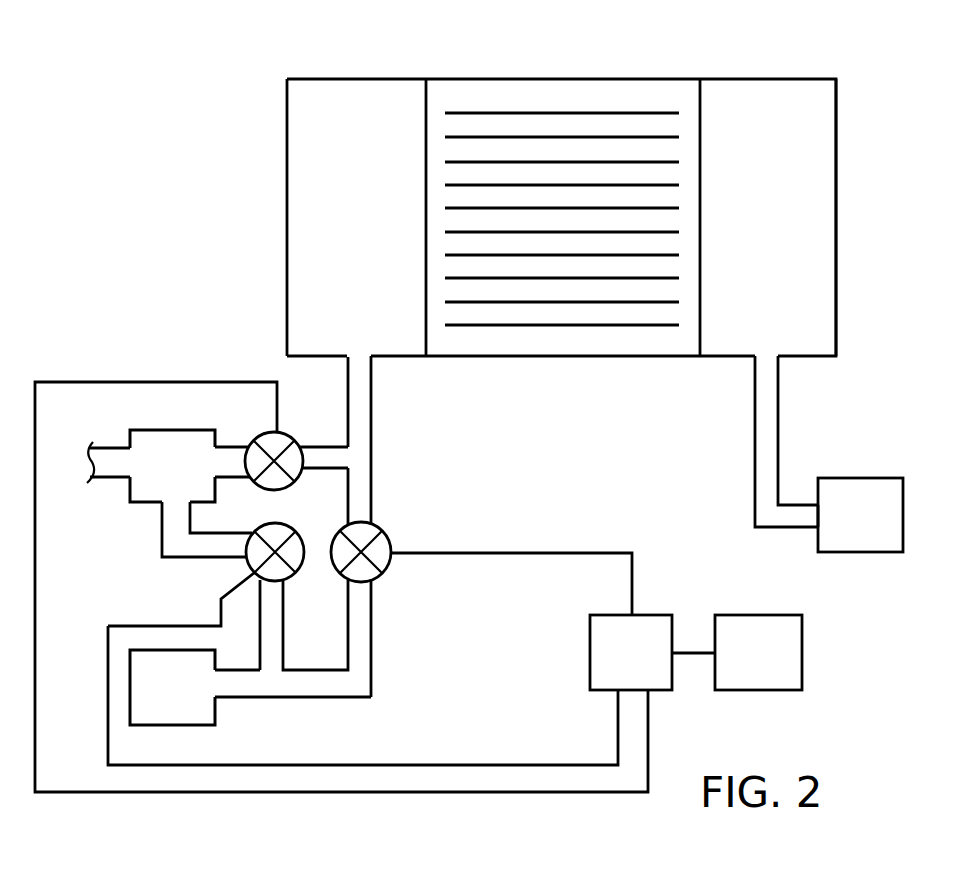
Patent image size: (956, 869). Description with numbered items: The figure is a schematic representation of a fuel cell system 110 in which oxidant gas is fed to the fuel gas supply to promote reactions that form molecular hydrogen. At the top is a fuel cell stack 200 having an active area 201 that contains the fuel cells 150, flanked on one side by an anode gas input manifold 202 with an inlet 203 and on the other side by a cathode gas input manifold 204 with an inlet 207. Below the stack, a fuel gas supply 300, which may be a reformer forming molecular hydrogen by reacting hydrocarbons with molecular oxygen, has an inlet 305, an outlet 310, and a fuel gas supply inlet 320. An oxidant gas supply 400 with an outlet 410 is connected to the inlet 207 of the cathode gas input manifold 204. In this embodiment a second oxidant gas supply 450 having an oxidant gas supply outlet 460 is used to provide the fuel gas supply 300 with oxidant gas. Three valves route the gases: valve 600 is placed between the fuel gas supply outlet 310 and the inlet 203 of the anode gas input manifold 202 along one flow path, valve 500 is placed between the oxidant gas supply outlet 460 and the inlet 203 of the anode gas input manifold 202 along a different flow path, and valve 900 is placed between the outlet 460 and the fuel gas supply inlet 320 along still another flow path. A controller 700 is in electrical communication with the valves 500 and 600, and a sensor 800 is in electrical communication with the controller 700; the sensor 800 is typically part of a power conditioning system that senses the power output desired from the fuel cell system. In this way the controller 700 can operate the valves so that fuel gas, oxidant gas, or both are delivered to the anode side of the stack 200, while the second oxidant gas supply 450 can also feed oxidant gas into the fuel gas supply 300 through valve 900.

The system 110 is at (82, 330).
The fuel cells 150 is at (668, 126).
The fuel cell stack 200 is at (243, 156).
The active area 201 is at (547, 152).
The anode gas input manifold 202 is at (338, 245).
The inlet 203 is at (358, 356).
The cathode gas input manifold 204 is at (805, 213).
The inlet 207 is at (766, 355).
The fuel gas supply 300 is at (200, 475).
The inlet 305 is at (132, 463).
The outlet 310 is at (215, 458).
The fuel gas supply inlet 320 is at (173, 503).
The oxidant gas supply 400 is at (889, 525).
The outlet 410 is at (817, 515).
The second oxidant gas supply 450 is at (202, 698).
The oxidant gas supply outlet 460 is at (213, 682).
The valve 500 is at (385, 537).
The valve 600 is at (291, 434).
The controller 700 is at (660, 663).
The sensor 800 is at (787, 663).
The valve 900 is at (307, 567).